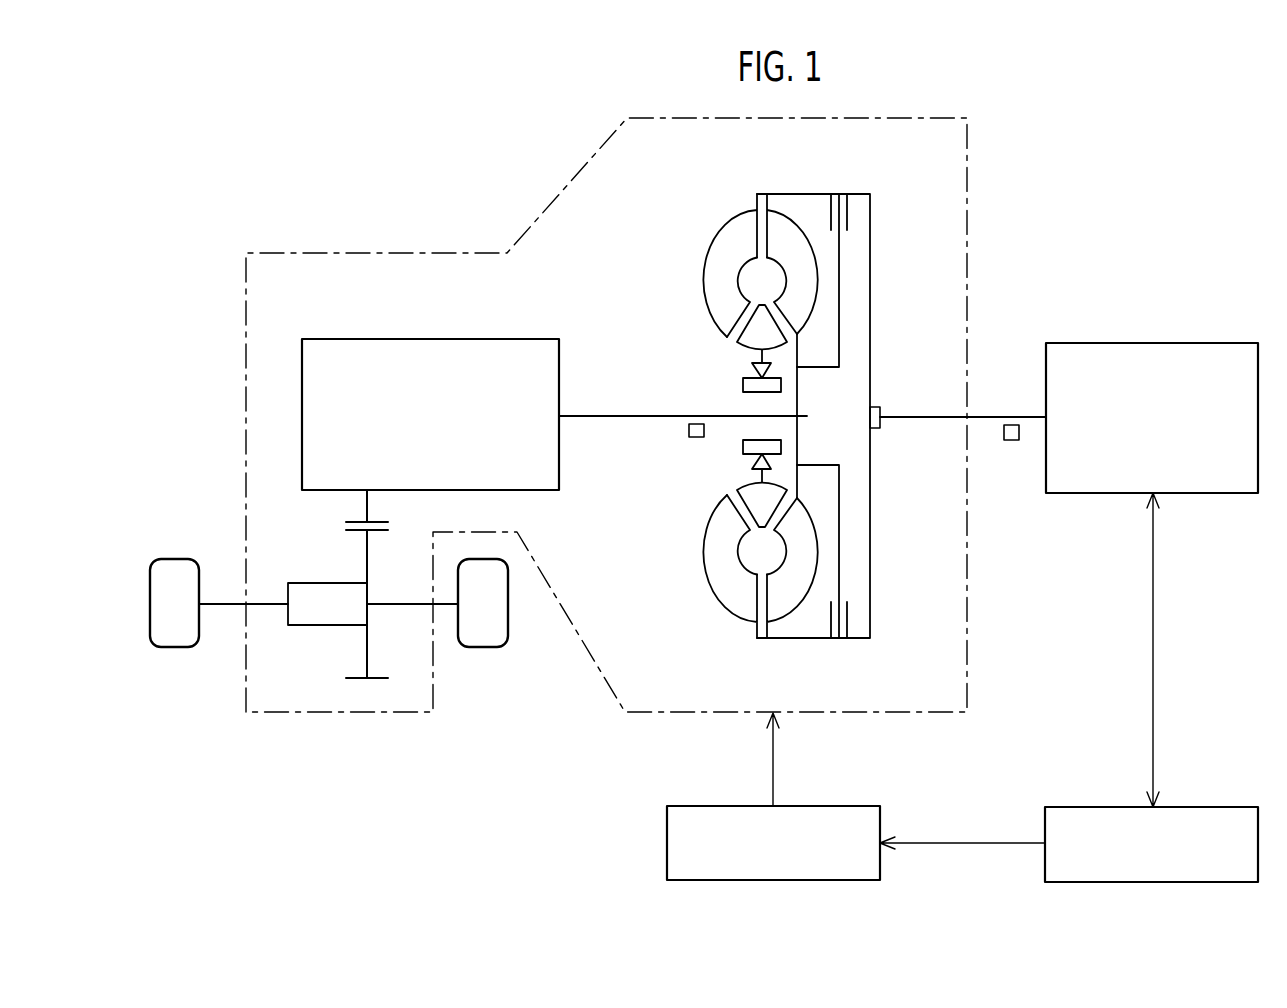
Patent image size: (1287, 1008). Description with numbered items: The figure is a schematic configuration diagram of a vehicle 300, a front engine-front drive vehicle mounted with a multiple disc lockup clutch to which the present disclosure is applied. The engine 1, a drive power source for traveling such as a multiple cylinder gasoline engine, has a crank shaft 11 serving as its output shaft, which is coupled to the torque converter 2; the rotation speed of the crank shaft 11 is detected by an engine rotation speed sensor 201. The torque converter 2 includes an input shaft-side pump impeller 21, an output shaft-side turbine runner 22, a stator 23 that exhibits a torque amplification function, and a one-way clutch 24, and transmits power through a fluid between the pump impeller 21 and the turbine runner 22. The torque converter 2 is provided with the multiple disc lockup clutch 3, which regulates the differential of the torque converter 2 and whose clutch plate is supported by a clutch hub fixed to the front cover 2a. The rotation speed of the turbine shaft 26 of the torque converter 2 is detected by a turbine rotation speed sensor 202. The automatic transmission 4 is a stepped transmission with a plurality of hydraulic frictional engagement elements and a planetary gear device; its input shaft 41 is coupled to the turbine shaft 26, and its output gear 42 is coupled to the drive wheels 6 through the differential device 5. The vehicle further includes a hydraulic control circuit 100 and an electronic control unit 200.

The engine 1 is at (1114, 343).
The crank shaft 11 is at (1017, 417).
The torque converter 2 is at (725, 178).
The front cover 2a is at (872, 261).
The multiple disc lockup clutch 3 is at (855, 215).
The pump impeller 21 is at (718, 243).
The turbine runner 22 is at (786, 228).
The stator 23 is at (745, 342).
The one-way clutch 24 is at (752, 372).
The turbine shaft 26 is at (730, 418).
The automatic transmission 4 is at (463, 338).
The input shaft 41 is at (631, 416).
The output gear 42 is at (355, 520).
The differential device 5 is at (324, 645).
The drive wheels 6 is at (172, 641).
The hydraulic control circuit 100 is at (700, 806).
The electronic control unit 200 is at (1098, 807).
The engine rotation speed sensor 201 is at (1011, 442).
The turbine rotation speed sensor 202 is at (688, 432).
The vehicle 300 is at (413, 138).